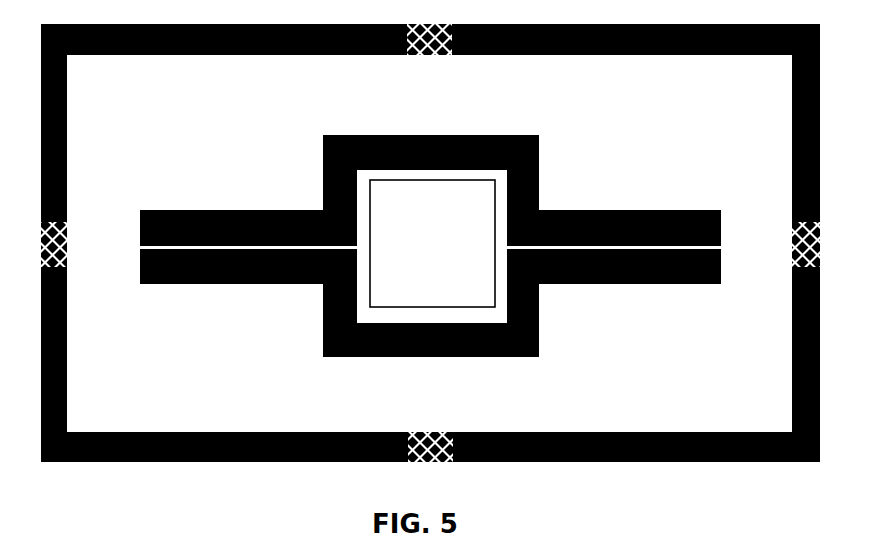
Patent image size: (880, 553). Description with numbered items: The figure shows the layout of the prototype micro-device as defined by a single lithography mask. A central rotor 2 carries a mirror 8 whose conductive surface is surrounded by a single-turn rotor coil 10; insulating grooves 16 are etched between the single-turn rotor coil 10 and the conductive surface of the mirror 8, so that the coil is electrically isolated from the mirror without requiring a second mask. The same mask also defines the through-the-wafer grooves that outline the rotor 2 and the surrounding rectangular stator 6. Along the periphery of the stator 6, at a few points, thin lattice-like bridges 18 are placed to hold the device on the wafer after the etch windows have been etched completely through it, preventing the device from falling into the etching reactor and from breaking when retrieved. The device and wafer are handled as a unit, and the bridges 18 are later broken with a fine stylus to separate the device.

The rotor 2 is at (352, 225).
The stator 6 is at (430, 243).
The mirror 8 is at (432, 246).
The single-turn rotor coil 10 is at (432, 246).
The insulating grooves 16 is at (431, 246).
The bridges 18 is at (430, 243).